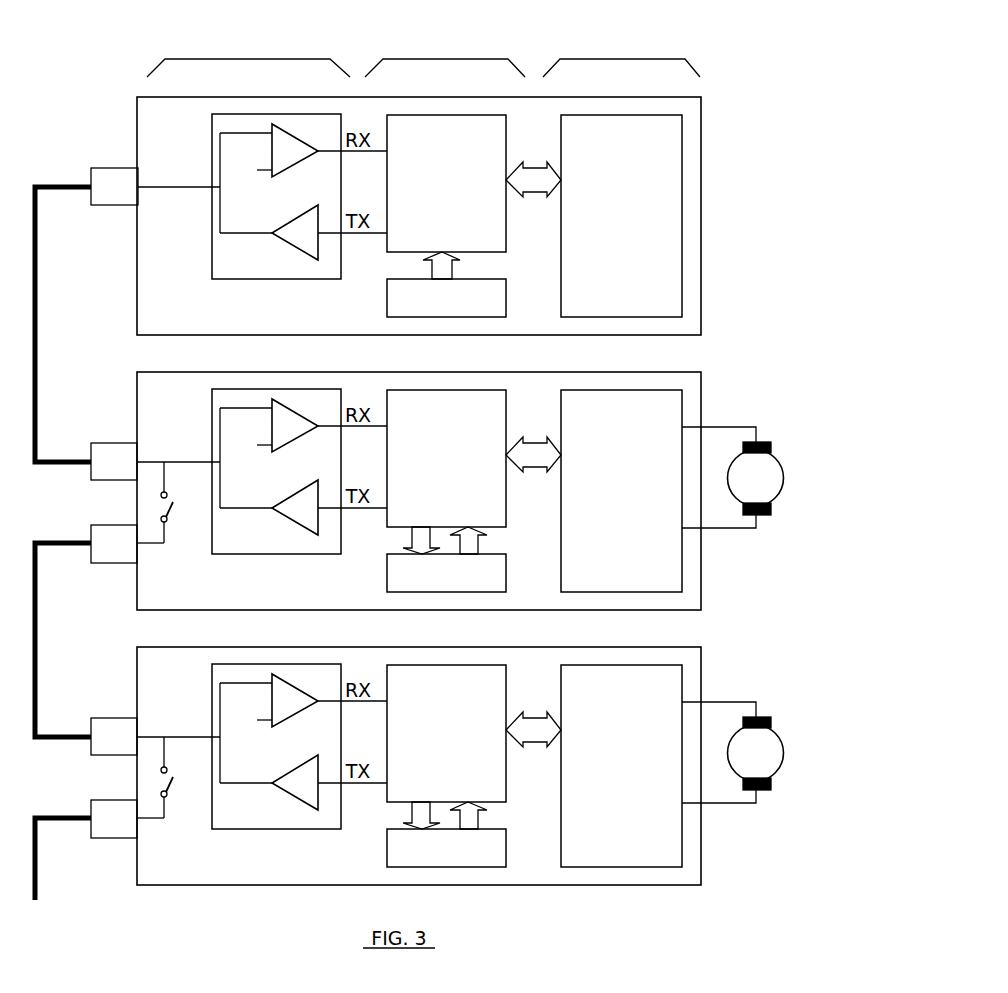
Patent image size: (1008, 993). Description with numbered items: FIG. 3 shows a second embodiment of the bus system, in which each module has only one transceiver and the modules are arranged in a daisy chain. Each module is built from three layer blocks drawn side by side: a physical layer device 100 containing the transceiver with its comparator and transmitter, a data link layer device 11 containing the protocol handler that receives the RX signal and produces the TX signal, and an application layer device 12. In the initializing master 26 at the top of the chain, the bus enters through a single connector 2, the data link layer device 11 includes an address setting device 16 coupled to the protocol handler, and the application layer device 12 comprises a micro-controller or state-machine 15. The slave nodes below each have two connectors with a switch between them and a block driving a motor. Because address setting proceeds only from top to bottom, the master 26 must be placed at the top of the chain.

The bus connector 2 is at (120, 180).
The data link layer device 11 is at (460, 70).
The application layer device 12 is at (635, 70).
The micro-controller or state-machine 15 is at (615, 216).
The address setting device 16 is at (430, 309).
The initializing master 26 is at (695, 290).
The physical layer device 100 is at (258, 68).